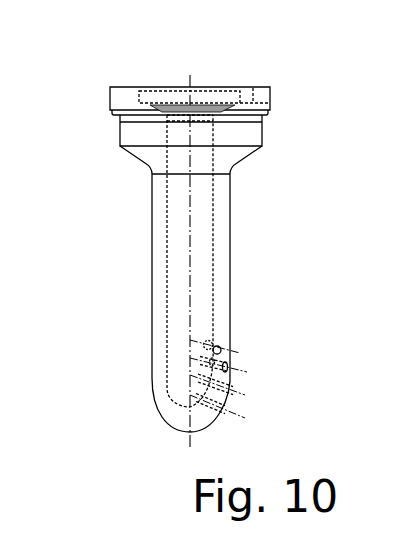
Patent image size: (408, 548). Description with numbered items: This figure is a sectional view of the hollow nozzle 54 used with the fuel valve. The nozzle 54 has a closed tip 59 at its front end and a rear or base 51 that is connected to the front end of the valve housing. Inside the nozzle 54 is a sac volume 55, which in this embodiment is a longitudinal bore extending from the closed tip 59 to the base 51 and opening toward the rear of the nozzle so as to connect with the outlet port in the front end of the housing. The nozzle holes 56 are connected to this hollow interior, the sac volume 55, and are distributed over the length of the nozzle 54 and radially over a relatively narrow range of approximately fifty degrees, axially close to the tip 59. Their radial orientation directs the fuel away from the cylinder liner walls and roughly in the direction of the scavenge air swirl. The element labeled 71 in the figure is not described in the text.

The base 51 is at (92, 118).
The nozzle 54 is at (273, 212).
The sac volume 55 is at (182, 250).
The nozzle holes 56 is at (250, 422).
The tip 59 is at (172, 452).
The flange recess 71 is at (202, 97).